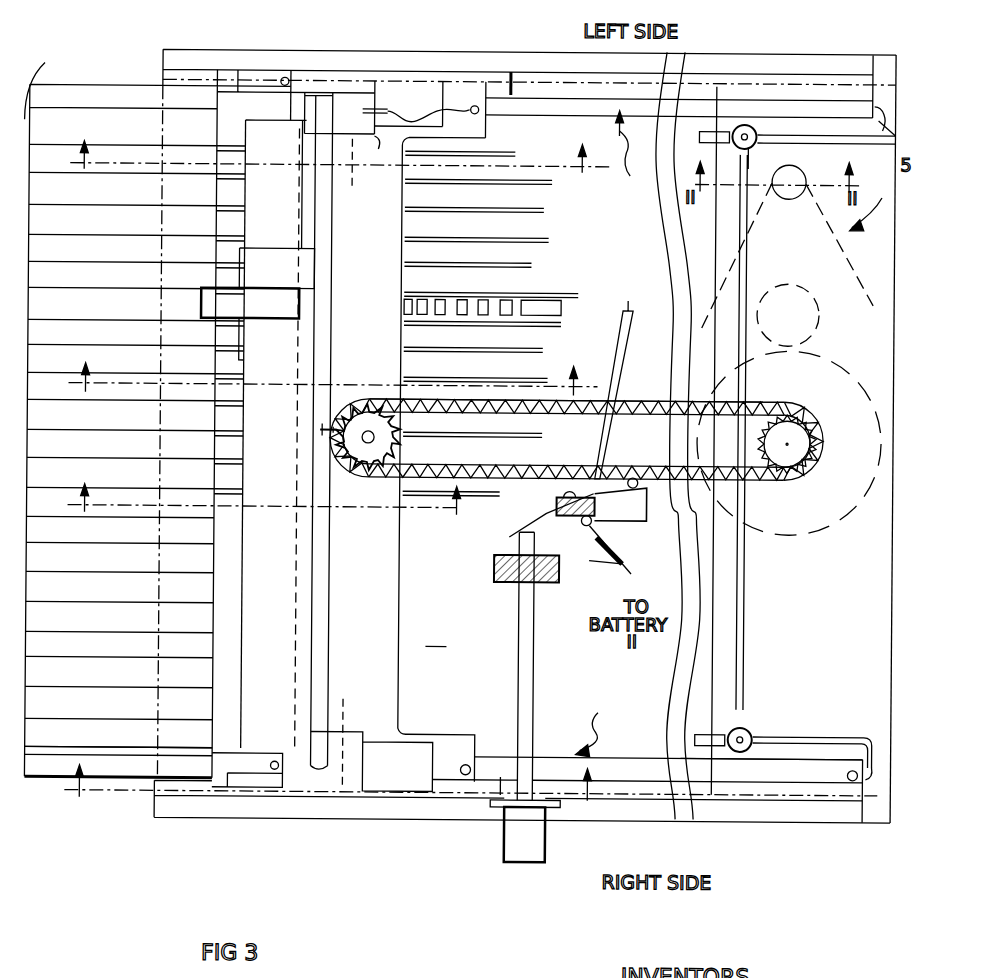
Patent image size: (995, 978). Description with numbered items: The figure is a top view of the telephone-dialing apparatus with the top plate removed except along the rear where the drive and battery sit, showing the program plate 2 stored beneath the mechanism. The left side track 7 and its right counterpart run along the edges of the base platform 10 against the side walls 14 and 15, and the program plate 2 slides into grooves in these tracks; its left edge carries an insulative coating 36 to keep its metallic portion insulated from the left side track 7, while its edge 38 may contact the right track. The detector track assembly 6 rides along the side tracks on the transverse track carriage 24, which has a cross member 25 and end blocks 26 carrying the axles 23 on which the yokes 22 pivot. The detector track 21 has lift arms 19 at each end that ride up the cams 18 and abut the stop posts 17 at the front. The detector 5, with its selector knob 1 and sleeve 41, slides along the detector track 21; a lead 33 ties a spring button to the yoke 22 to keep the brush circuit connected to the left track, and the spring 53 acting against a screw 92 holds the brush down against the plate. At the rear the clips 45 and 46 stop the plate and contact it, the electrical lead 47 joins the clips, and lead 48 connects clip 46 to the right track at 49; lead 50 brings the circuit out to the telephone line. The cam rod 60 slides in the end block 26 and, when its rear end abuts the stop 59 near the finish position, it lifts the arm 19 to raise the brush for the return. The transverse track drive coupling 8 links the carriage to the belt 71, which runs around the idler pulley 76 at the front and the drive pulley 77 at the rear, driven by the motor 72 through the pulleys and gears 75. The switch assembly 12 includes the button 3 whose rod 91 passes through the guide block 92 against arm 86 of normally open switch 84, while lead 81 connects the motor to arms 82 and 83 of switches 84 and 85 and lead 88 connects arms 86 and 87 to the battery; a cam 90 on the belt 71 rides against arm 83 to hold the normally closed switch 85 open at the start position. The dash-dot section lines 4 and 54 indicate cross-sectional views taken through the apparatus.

The selector knob 1 is at (198, 305).
The program plate 2 is at (41, 88).
The button 3 is at (549, 840).
The section line 4 is at (340, 168).
The detector 5 is at (238, 280).
The detector track 6 is at (238, 522).
The left side track 7 is at (471, 467).
The transverse track drive coupling 8 is at (455, 392).
The base platform 10 is at (661, 411).
The switch assembly 12 is at (497, 543).
The side wall 14 is at (185, 52).
The side wall 15 is at (240, 822).
The stop post 17 is at (286, 78).
The cam 18 is at (252, 72).
The lift arm 19 is at (310, 63).
The detector track 21 is at (240, 222).
The yoke 22 is at (374, 436).
The axle 23 is at (350, 173).
The transverse track carriage 24 is at (424, 142).
The cross member 25 is at (402, 235).
The end block 26 is at (403, 95).
The lead 33 is at (430, 112).
The insulative coating 36 is at (80, 88).
The edge 38 is at (57, 767).
The sleeve 41 is at (283, 250).
The clip 45 is at (712, 150).
The clip 46 is at (746, 726).
The electrical lead 47 is at (748, 648).
The lead 48 is at (803, 735).
The connection point 49 is at (876, 768).
The lead 50 is at (889, 427).
The spring 53 is at (330, 558).
The rack 54 is at (433, 293).
The stop 59 is at (868, 52).
The cam rod 60 is at (508, 72).
The belt 71 is at (490, 400).
The motor 72 is at (830, 160).
The pulleys and gears 75 is at (846, 226).
The idler pulley 76 is at (404, 428).
The drive pulley 77 is at (798, 446).
The lead 81 is at (622, 372).
The arm 82 is at (546, 497).
The arm 83 is at (652, 530).
The normally open switch 84 is at (540, 507).
The normally closed switch 85 is at (620, 562).
The arm 86 is at (517, 540).
The arm 87 is at (600, 528).
The lead 88 is at (612, 560).
The cam 90 is at (645, 470).
The rod 91 is at (508, 630).
The guide block 92 is at (322, 431).